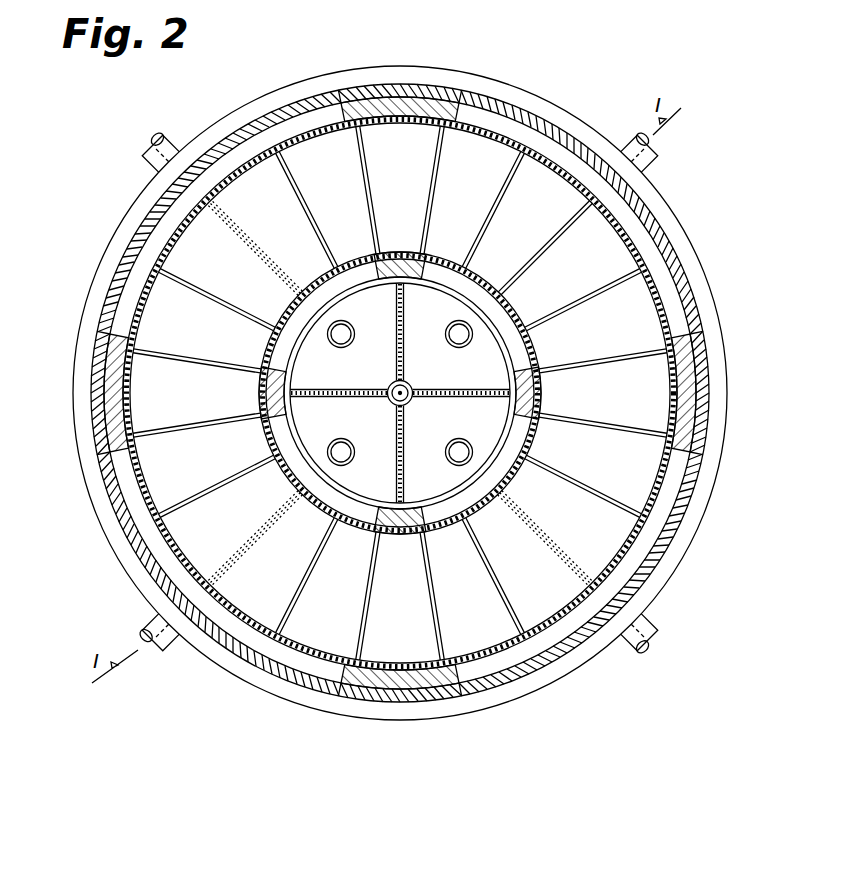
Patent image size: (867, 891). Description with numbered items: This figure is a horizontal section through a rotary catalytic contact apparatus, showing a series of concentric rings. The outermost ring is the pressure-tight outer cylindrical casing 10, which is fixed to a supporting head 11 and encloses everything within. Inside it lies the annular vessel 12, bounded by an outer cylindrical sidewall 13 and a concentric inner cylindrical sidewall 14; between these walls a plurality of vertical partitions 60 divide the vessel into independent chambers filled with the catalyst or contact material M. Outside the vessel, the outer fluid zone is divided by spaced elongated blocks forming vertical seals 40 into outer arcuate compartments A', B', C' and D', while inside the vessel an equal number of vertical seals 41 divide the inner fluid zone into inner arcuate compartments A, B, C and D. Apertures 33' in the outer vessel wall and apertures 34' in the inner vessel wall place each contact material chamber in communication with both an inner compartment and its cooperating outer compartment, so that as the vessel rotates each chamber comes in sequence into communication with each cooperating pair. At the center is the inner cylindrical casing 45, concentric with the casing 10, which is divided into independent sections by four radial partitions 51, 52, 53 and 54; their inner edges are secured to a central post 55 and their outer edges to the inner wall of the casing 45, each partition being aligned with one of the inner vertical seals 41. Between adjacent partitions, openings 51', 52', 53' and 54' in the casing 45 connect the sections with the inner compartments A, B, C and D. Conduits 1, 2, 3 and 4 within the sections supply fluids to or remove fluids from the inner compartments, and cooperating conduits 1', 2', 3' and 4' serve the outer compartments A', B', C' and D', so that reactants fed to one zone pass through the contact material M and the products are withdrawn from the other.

The conduit 1 is at (446, 347).
The conduit 2 is at (358, 338).
The conduit 3 is at (355, 452).
The conduit 4 is at (452, 433).
The cooperating conduit 1' is at (627, 128).
The cooperating conduit 2' is at (159, 130).
The cooperating conduit 3' is at (139, 623).
The cooperating conduit 4' is at (665, 623).
The outer cylindrical casing 10 is at (680, 257).
The supporting head 11 is at (728, 427).
The vessel 12 is at (627, 230).
The outer cylindrical sidewall 13 is at (667, 482).
The inner cylindrical sidewall 14 is at (482, 513).
The apertures 33' is at (415, 393).
The apertures 34' is at (258, 538).
The vertical seals 40 is at (417, 100).
The vertical seals 41 is at (408, 253).
The inner cylindrical casing 45 is at (288, 413).
The radial partition 51 is at (462, 380).
The radial partition 52 is at (422, 332).
The radial partition 53 is at (339, 375).
The radial partition 54 is at (420, 455).
The opening 51' is at (455, 338).
The opening 52' is at (345, 338).
The opening 53' is at (345, 448).
The opening 54' is at (455, 448).
The central post 55 is at (392, 397).
The vertical partitions 60 is at (227, 305).
The inner compartment A is at (488, 268).
The inner compartment B is at (522, 490).
The inner compartment C is at (280, 492).
The inner compartment D is at (304, 267).
The outer compartment A' is at (526, 90).
The outer compartment B' is at (568, 670).
The outer compartment C' is at (231, 676).
The outer compartment D' is at (238, 115).
The contact material M is at (280, 229).